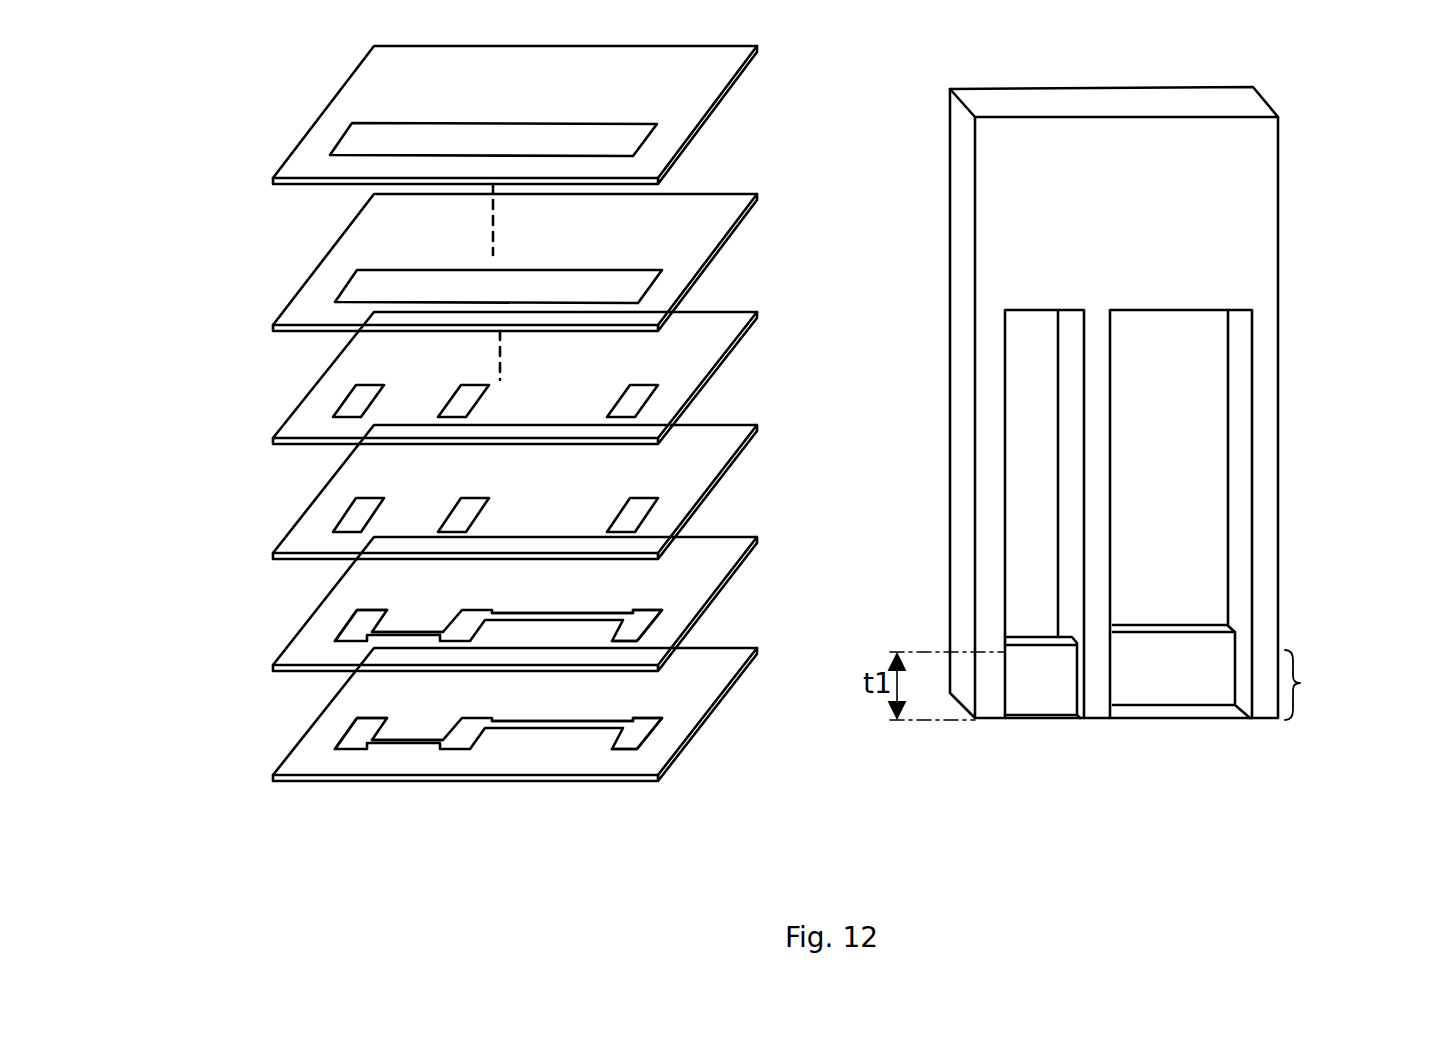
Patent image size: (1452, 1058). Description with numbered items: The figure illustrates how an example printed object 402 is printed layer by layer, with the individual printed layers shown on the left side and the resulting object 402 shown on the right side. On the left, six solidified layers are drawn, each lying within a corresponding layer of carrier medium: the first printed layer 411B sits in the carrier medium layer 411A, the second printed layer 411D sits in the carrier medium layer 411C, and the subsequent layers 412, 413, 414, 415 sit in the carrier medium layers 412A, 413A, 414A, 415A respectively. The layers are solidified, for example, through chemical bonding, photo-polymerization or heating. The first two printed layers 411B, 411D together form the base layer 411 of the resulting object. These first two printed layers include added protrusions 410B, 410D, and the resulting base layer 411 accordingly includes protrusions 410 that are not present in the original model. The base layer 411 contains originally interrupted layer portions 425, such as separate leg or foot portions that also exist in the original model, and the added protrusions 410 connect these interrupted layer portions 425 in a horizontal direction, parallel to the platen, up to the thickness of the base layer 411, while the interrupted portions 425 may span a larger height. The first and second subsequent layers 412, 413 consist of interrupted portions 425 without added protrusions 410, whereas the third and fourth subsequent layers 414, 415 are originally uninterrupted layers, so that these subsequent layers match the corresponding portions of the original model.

The printed object 402 is at (1292, 218).
The protrusions 410 is at (1030, 672).
The protrusions 410B is at (382, 742).
The protrusions 410D is at (408, 634).
The base layer 411 is at (1303, 682).
The layer of carrier medium 411A is at (330, 765).
The printed layer 411B is at (345, 733).
The layer of carrier medium 411C is at (675, 598).
The printed layer 411D is at (345, 630).
The first subsequent layer 412 is at (345, 519).
The layer of carrier medium 412A is at (349, 481).
The second subsequent layer 413 is at (352, 406).
The layer of carrier medium 413A is at (357, 361).
The third subsequent layer 414 is at (466, 262).
The layer of carrier medium 414A is at (407, 236).
The fourth subsequent layer 415 is at (373, 140).
The layer of carrier medium 415A is at (392, 79).
The interrupted layer portions 425 is at (632, 403).